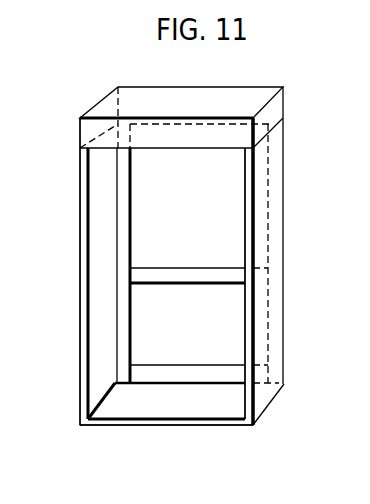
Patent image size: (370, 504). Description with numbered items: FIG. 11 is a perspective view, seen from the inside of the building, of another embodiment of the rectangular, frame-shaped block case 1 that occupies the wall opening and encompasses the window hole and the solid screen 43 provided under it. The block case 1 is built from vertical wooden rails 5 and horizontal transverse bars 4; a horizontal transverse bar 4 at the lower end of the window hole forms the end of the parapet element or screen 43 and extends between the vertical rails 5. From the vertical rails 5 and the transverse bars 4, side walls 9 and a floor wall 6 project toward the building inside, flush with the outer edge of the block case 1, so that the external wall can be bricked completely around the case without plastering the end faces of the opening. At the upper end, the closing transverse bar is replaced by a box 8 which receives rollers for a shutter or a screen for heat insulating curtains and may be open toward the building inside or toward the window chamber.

The block case 1 is at (292, 193).
The horizontal transverse bar 4 is at (170, 280).
The vertical rails 5 is at (122, 237).
The floor wall 6 is at (145, 410).
The box 8 is at (143, 97).
The side walls 9 is at (95, 200).
The solid screen 43 is at (233, 352).